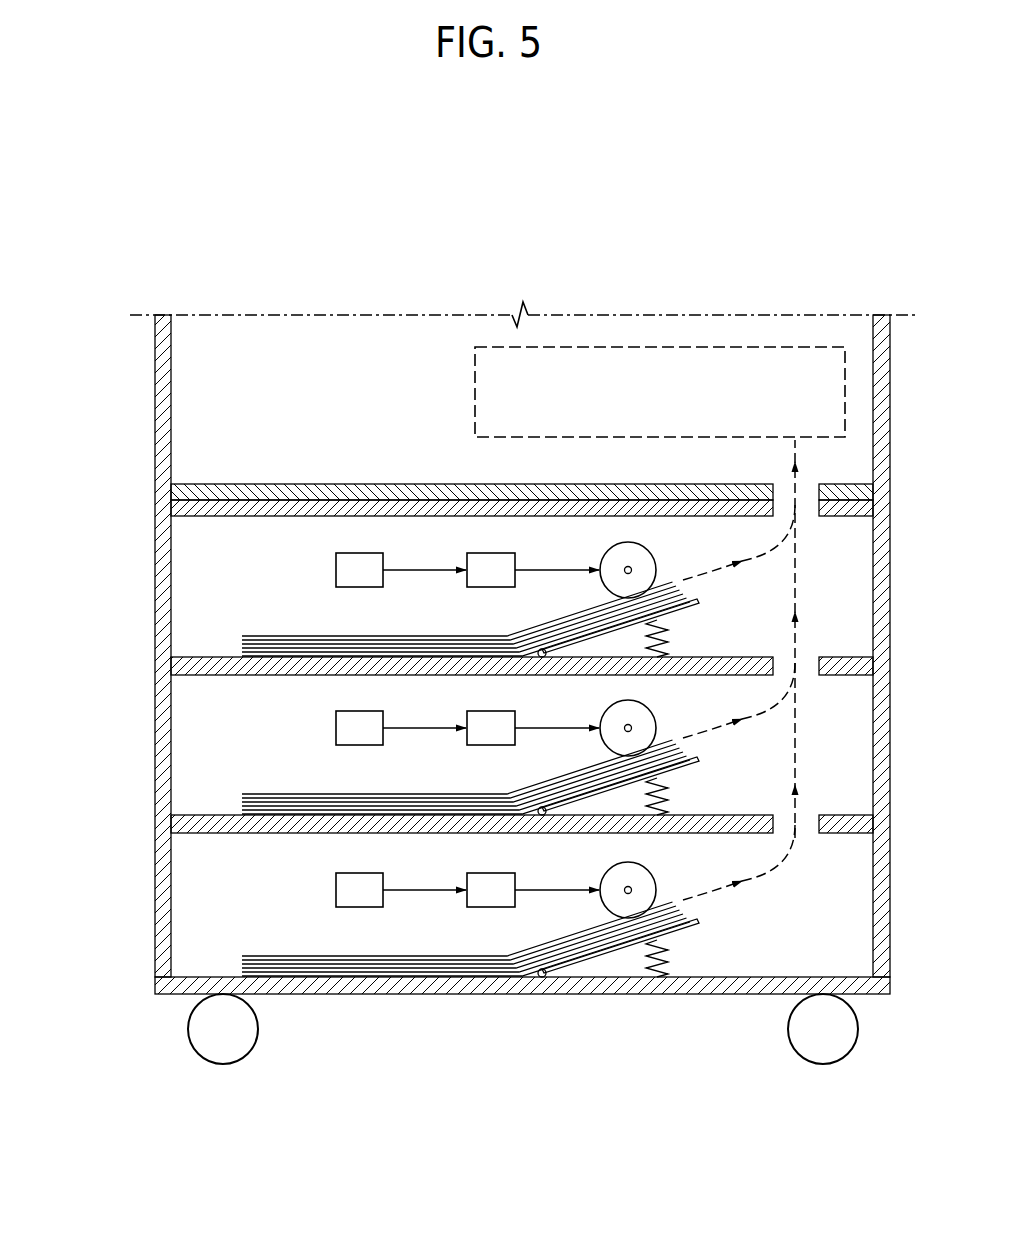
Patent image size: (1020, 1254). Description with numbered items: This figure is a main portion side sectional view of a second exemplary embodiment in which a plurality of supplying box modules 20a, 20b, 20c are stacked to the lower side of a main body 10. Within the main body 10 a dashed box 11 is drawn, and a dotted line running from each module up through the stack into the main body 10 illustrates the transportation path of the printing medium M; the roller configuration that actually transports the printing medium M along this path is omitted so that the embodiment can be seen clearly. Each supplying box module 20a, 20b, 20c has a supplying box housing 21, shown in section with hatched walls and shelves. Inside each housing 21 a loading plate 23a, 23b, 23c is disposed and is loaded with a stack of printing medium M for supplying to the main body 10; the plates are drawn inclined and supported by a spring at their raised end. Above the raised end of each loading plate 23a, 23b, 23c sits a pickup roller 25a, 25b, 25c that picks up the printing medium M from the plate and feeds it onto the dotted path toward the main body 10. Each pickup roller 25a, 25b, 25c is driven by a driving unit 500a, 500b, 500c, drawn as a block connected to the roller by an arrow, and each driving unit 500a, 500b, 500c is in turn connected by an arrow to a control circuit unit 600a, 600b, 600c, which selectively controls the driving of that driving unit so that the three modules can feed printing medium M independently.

The main body 10 is at (143, 378).
The image forming unit 11 is at (475, 385).
The supplying box housing 21 is at (157, 640).
The supplying box module 20a is at (143, 577).
The supplying box module 20b is at (143, 735).
The supplying box module 20c is at (143, 894).
The control circuit unit 600a is at (335, 561).
The control circuit unit 600b is at (316, 713).
The control circuit unit 600c is at (316, 875).
The driving unit 500a is at (466, 561).
The driving unit 500b is at (450, 713).
The driving unit 500c is at (450, 875).
The pickup roller 25a is at (658, 572).
The pickup roller 25b is at (697, 709).
The pickup roller 25c is at (697, 943).
The loading plate 23a is at (698, 604).
The loading plate 23b is at (657, 786).
The loading plate 23c is at (621, 990).
The printing medium M is at (255, 636).